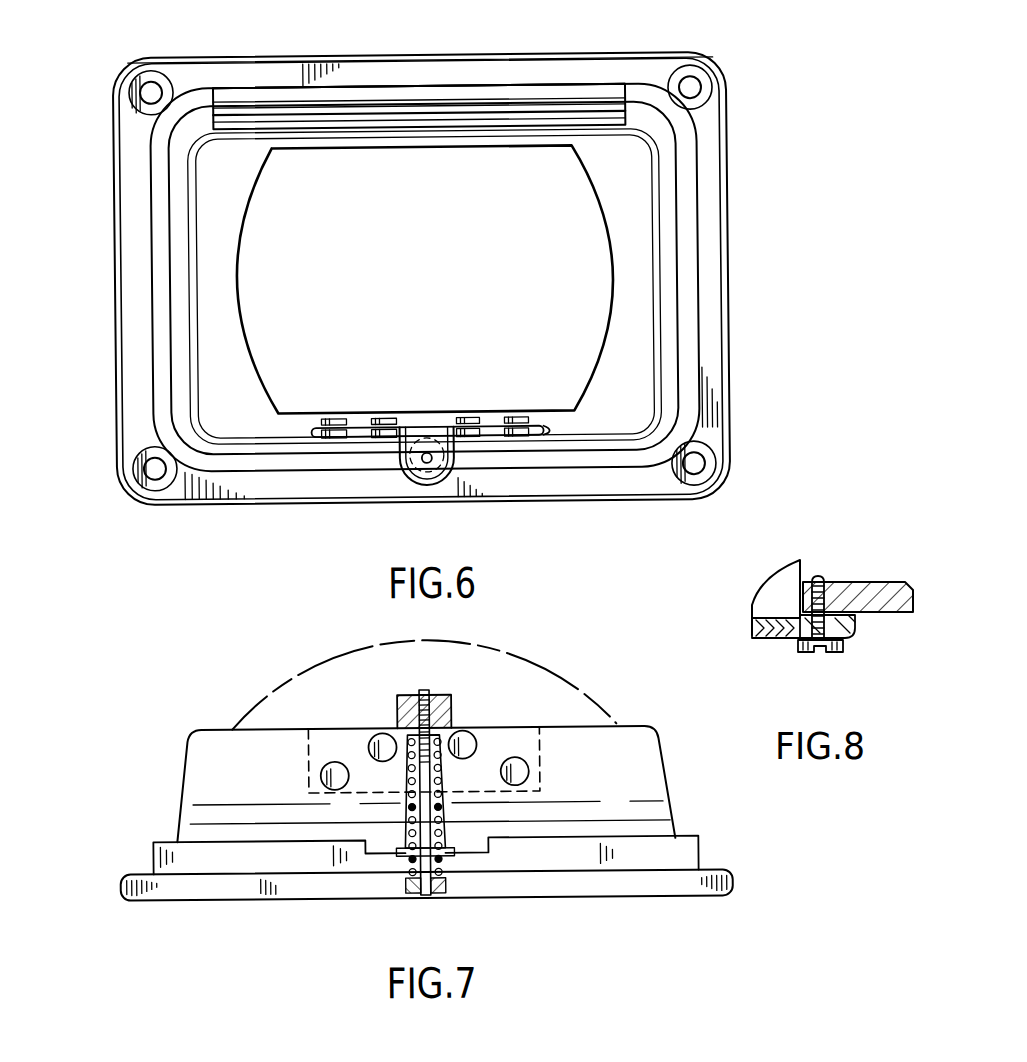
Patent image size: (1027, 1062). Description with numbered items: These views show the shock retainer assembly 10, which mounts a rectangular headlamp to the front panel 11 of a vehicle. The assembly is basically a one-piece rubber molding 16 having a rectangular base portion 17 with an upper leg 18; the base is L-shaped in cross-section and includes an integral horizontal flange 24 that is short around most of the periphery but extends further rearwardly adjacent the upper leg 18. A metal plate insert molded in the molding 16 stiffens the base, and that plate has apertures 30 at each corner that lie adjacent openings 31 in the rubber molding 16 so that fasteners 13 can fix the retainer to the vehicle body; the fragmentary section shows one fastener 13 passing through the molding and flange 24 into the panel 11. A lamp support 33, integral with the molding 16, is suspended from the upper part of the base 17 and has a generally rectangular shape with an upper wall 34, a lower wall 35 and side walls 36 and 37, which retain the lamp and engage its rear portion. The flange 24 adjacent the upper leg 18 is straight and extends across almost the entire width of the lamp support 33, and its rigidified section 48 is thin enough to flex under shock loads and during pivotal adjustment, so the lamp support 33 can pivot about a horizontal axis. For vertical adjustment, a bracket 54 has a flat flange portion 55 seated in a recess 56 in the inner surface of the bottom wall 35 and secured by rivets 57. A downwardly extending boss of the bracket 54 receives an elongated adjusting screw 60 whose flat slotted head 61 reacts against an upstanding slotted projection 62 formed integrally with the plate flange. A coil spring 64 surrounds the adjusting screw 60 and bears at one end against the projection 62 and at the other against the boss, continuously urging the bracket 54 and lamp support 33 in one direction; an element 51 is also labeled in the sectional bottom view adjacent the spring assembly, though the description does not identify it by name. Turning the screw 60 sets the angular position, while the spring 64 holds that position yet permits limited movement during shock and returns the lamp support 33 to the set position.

In FIG. 7, the shock retainer assembly 10 is at (150, 786).
In FIG. 8, the front panel 11 is at (873, 600).
In FIG. 8, the fastener 13 is at (821, 576).
In FIG. 7, the rubber molding 16 is at (184, 734).
In FIG. 8, the rubber molding 16 is at (748, 648).
In FIG. 6, the base portion 17 is at (500, 482).
In FIG. 7, the base portion 17 is at (270, 904).
In FIG. 6, the upper leg 18 is at (368, 74).
In FIG. 8, the horizontal flange 24 is at (777, 634).
In FIG. 6, the aperture 30 is at (150, 78).
In FIG. 6, the opening 31 is at (166, 83).
In FIG. 6, the lamp support 33 is at (222, 276).
In FIG. 7, the lamp support 33 is at (225, 750).
In FIG. 6, the upper wall 34 is at (428, 118).
In FIG. 6, the lower wall 35 is at (316, 448).
In FIG. 7, the lower wall 35 is at (602, 775).
In FIG. 6, the side wall 36 is at (670, 262).
In FIG. 6, the side wall 37 is at (172, 260).
In FIG. 6, the section 48 is at (498, 85).
In FIG. 7, the spring 51 is at (446, 781).
In FIG. 6, the bracket 54 is at (401, 440).
In FIG. 7, the bracket 54 is at (453, 706).
In FIG. 6, the flat flange portion 55 is at (489, 419).
In FIG. 6, the recess 56 is at (545, 430).
In FIG. 6, the rivet 57 is at (331, 419).
In FIG. 7, the adjusting screw 60 is at (412, 783).
In FIG. 7, the slotted head 61 is at (415, 894).
In FIG. 7, the slotted projection 62 is at (446, 894).
In FIG. 7, the coil spring 64 is at (523, 766).